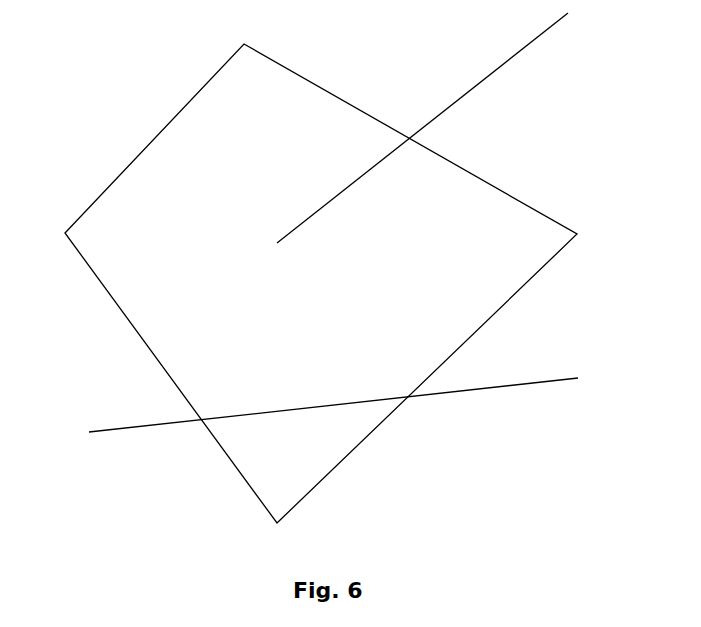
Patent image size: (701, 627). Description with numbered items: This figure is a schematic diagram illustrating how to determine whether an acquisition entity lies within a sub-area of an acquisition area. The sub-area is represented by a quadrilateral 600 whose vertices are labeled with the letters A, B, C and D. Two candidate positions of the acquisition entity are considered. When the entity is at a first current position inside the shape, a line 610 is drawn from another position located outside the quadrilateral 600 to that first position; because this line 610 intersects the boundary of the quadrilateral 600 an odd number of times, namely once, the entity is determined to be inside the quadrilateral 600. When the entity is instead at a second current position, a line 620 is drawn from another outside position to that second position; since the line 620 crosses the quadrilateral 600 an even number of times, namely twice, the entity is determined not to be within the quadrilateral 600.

The quadrilateral 600 is at (112, 44).
The line 610 is at (507, 64).
The line 620 is at (482, 384).